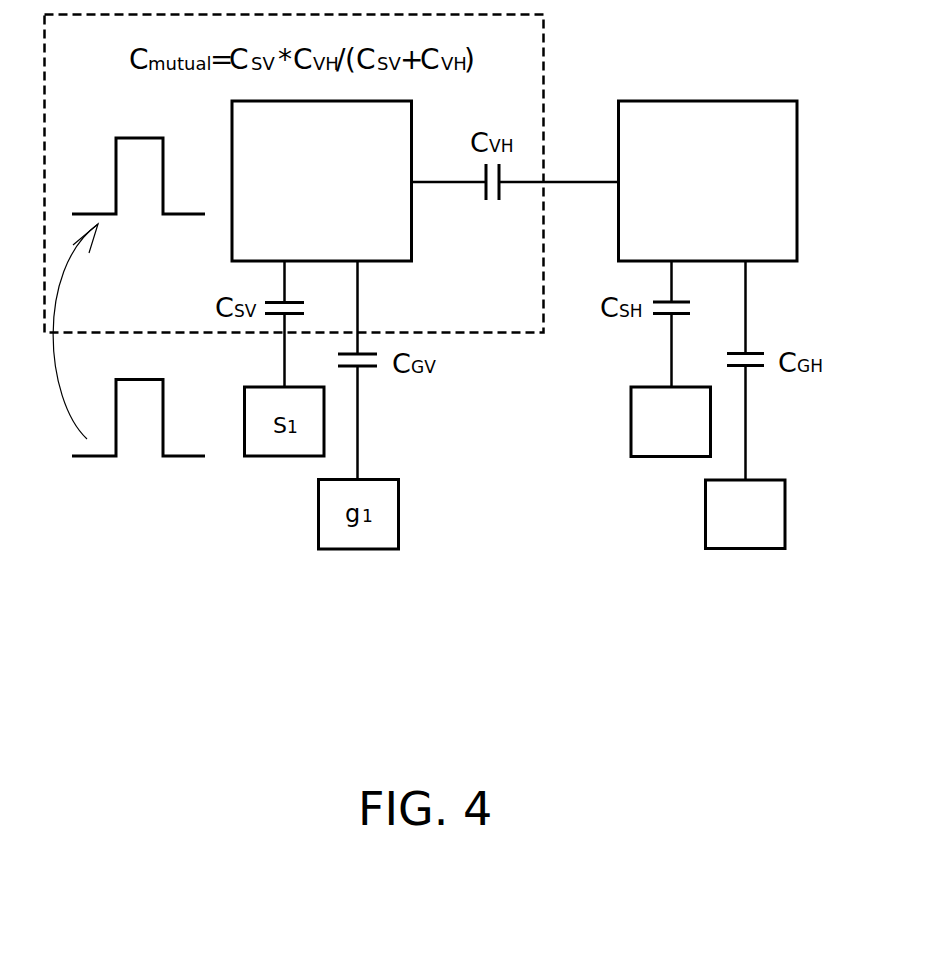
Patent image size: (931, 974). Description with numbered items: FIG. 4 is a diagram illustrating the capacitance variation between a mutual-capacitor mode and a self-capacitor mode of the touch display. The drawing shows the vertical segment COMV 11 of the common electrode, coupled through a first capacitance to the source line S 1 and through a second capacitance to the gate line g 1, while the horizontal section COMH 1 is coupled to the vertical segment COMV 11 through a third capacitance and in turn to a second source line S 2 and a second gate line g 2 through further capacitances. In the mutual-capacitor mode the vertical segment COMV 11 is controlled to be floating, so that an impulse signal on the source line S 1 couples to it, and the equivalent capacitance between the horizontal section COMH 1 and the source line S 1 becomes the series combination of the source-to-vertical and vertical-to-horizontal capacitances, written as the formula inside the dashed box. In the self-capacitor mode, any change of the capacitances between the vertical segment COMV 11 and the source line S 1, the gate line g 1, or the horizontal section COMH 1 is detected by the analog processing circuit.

The vertical segment 11 is at (322, 181).
The horizontal section 1 is at (708, 181).
The source/gate lines S2, g2 2 is at (708, 468).